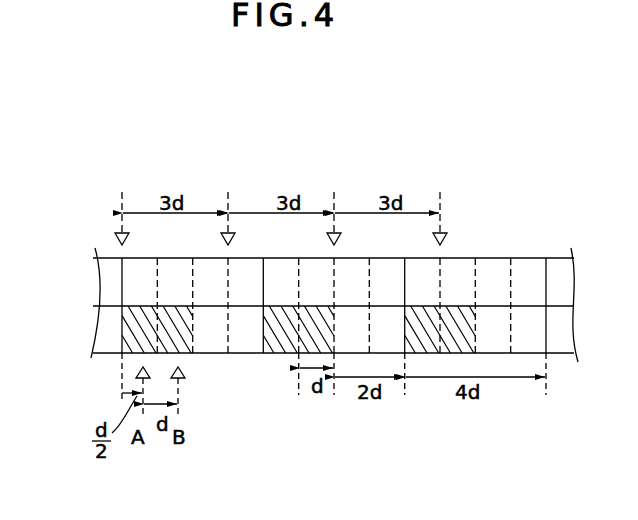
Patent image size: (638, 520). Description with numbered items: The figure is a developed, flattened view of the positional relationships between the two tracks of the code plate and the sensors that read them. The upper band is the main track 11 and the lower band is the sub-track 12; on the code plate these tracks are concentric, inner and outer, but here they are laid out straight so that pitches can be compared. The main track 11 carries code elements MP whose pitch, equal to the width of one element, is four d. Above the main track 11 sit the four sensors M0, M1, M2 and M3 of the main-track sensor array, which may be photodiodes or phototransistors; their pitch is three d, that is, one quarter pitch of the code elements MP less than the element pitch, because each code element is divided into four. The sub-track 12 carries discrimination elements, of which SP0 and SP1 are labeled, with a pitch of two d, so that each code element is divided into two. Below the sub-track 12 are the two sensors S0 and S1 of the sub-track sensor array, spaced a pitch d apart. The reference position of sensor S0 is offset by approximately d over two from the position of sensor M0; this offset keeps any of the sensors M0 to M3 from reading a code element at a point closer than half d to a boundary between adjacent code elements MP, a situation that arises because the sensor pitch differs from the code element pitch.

The main track 11 is at (120, 296).
The sub-track 12 is at (118, 323).
The sensor for the main track M0 is at (121, 209).
The sensor for the main track M1 is at (227, 209).
The sensor for the main track M2 is at (333, 209).
The sensor for the main track M3 is at (439, 209).
The code element MP is at (334, 264).
The sensor for the sub-track S0 is at (139, 372).
The sensor for the sub-track S1 is at (185, 380).
The discrimination element SP0 is at (190, 356).
The discrimination element SP1 is at (222, 356).